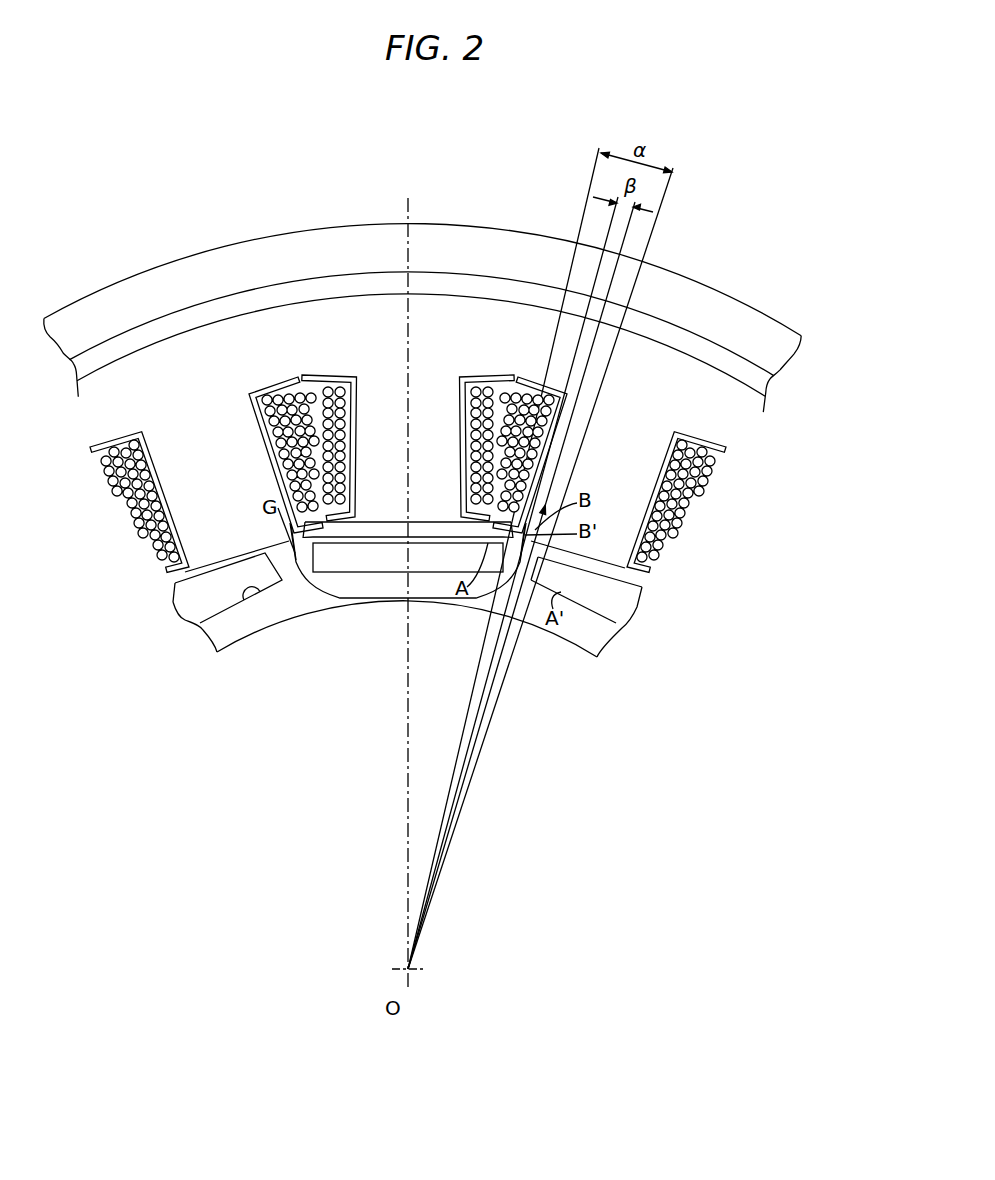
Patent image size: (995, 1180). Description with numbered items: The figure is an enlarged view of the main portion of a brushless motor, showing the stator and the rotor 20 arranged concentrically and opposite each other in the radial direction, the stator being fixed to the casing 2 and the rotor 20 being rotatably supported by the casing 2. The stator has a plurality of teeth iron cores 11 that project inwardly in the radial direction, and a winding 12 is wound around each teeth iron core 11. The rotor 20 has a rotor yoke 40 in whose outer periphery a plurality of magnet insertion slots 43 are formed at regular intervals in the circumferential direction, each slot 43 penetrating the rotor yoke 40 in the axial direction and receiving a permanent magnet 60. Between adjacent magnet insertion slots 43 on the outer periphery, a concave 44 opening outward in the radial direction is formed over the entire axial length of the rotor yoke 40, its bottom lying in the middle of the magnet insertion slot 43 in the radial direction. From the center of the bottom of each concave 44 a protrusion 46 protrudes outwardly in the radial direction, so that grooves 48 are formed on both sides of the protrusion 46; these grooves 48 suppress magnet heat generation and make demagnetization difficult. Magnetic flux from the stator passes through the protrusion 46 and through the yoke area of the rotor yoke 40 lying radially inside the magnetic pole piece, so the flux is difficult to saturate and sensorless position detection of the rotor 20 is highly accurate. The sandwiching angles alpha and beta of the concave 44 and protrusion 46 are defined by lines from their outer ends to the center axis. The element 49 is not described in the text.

The casing 2 is at (135, 276).
The teeth iron core 11 is at (383, 421).
The winding 12 is at (330, 393).
The rotor 20 is at (675, 579).
The rotor yoke 40 is at (606, 561).
The magnet insertion slot 43 is at (243, 590).
The concave 44 is at (528, 580).
The protrusion 46 is at (283, 542).
The groove 48 is at (293, 533).
The rotor core inner portion 49 is at (373, 610).
The permanent magnet 60 is at (219, 602).